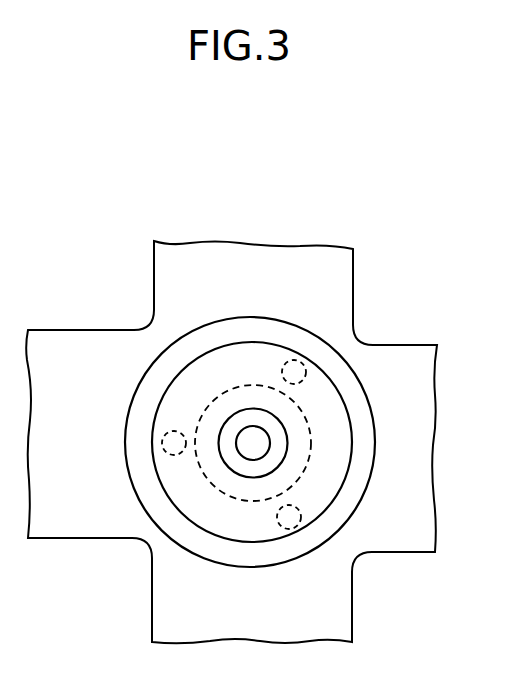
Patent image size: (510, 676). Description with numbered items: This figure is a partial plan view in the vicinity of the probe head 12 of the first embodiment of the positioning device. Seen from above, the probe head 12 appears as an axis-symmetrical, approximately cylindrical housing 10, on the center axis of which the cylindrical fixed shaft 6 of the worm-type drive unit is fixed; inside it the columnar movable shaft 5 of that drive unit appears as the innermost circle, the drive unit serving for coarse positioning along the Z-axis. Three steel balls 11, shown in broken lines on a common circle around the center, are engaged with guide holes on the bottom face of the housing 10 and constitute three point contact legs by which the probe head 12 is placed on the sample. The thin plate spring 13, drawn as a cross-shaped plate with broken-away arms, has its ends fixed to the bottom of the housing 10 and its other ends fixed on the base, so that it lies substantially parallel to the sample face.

The movable shaft 5 is at (260, 438).
The fixed shaft 6 is at (280, 452).
The housing 10 is at (363, 384).
The steel balls 11 is at (294, 372).
The probe head 12 is at (362, 362).
The thin plate spring 13 is at (340, 282).